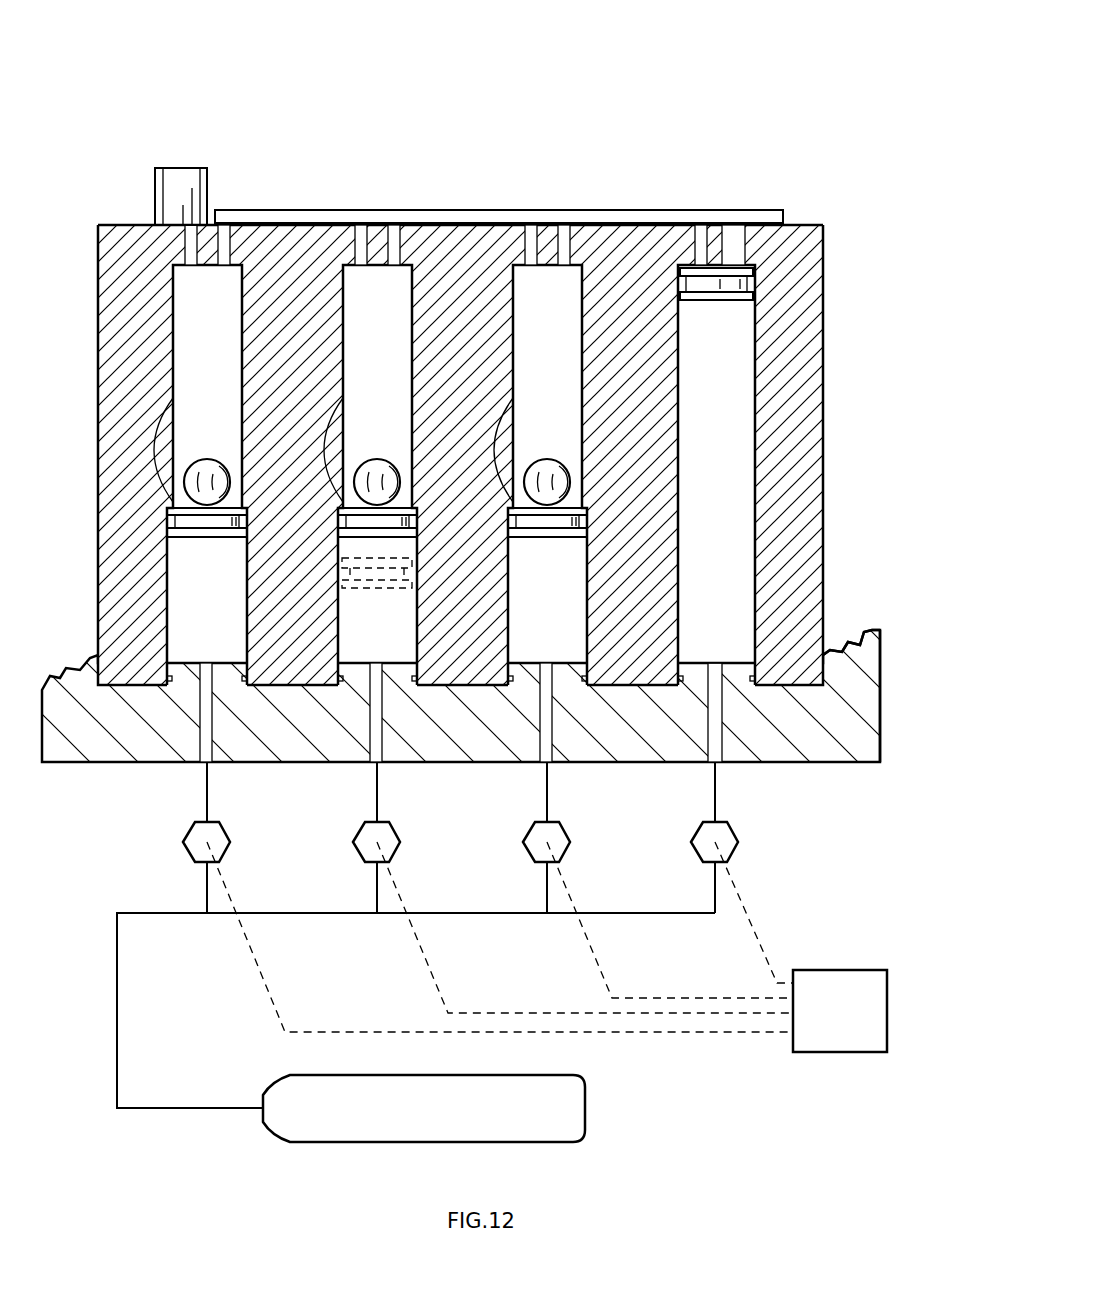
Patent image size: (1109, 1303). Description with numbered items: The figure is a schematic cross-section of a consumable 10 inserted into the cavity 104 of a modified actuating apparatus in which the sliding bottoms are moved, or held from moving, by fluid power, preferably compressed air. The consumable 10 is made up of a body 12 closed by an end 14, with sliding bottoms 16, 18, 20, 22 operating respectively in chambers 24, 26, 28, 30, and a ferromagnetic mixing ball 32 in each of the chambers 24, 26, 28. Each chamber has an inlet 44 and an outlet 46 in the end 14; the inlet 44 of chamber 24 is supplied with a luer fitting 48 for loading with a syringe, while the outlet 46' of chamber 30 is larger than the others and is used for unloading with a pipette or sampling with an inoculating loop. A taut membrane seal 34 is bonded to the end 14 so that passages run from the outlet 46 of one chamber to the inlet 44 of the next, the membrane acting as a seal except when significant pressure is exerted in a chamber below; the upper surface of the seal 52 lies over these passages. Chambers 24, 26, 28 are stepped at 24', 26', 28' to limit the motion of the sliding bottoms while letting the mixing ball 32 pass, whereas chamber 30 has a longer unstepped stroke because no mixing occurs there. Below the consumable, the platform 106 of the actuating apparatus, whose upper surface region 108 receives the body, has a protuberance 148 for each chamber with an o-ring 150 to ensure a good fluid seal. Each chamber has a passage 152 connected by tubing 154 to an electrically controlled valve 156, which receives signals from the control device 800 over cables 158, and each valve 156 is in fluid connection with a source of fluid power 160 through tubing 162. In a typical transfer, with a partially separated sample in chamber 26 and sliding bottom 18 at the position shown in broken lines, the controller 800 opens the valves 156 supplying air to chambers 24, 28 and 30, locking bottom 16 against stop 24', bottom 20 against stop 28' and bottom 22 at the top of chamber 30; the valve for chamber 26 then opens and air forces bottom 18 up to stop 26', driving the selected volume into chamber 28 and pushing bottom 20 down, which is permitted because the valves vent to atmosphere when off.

The consumable 10 is at (690, 64).
The body 12 is at (795, 352).
The end 14 is at (817, 230).
The sliding bottom 16 is at (203, 520).
The sliding bottom 18 is at (365, 520).
The sliding bottom 20 is at (545, 522).
The sliding bottom 22 is at (711, 280).
The chamber 24 is at (153, 455).
The step 24' is at (195, 436).
The chamber 26 is at (413, 417).
The step 26' is at (365, 436).
The chamber 28 is at (569, 417).
The step 28' is at (535, 436).
The chamber 30 is at (747, 347).
The mixing ball 32 is at (206, 459).
The membrane seal 34 is at (498, 223).
The inlet 44 is at (360, 226).
The outlet 46 is at (380, 191).
The outlet 46' is at (775, 212).
The luer fitting 48 is at (158, 168).
The plate top surface 52 is at (662, 210).
The cavity 104 is at (823, 650).
The platform 106 is at (828, 765).
The base portion 108 is at (848, 705).
The protuberance 148 is at (733, 668).
The o-ring 150 is at (750, 685).
The passage 152 is at (722, 765).
The tubing 154 is at (716, 800).
The electrically controlled valve 156 is at (735, 845).
The cable 158 is at (748, 918).
The source of fluid power 160 is at (568, 1108).
The tubing 162 is at (131, 913).
The control device 800 is at (800, 970).